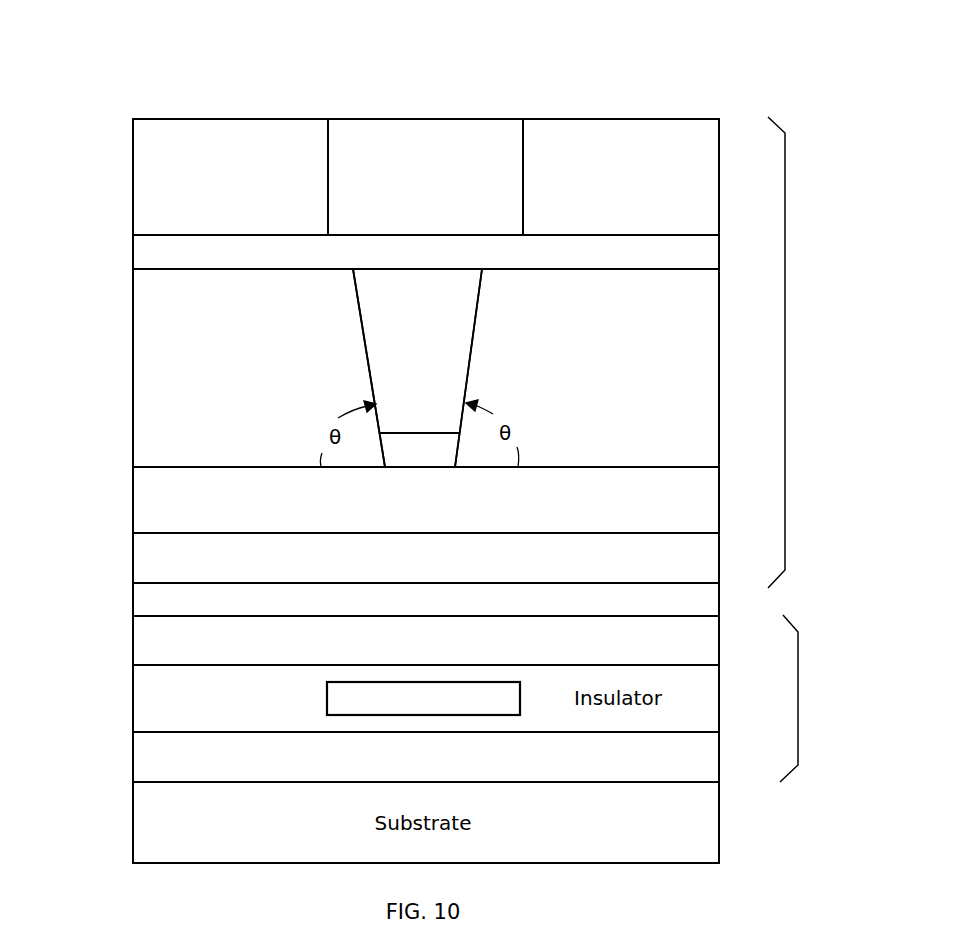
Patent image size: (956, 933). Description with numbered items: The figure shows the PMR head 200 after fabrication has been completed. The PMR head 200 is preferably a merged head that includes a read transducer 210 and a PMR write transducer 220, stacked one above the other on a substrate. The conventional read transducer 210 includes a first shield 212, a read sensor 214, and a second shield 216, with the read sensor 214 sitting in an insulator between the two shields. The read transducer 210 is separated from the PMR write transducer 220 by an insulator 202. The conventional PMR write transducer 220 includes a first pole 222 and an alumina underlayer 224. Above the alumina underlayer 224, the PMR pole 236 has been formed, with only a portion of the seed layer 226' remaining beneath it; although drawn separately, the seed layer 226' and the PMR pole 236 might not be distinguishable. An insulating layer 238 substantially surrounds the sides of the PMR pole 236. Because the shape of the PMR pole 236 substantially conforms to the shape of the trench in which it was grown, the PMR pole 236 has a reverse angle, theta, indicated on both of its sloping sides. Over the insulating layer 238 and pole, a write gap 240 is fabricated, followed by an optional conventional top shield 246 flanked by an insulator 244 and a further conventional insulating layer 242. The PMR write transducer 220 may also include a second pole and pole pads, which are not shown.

The PMR head 200 is at (405, 31).
The conventional insulating layer 242 is at (133, 127).
The conventional top shield 246 is at (442, 119).
The insulator 244 is at (719, 142).
The write gap 240 is at (719, 252).
The insulating layer 238 is at (133, 433).
The PMR pole 236 is at (363, 325).
The seed layer 226' is at (271, 368).
The alumina underlayer 224 is at (133, 516).
The first pole 222 is at (719, 549).
The insulator 202 is at (133, 602).
The second shield 216 is at (719, 653).
The read sensor 214 is at (327, 698).
The first shield 212 is at (719, 765).
The PMR write transducer 220 is at (785, 351).
The read transducer 210 is at (798, 698).